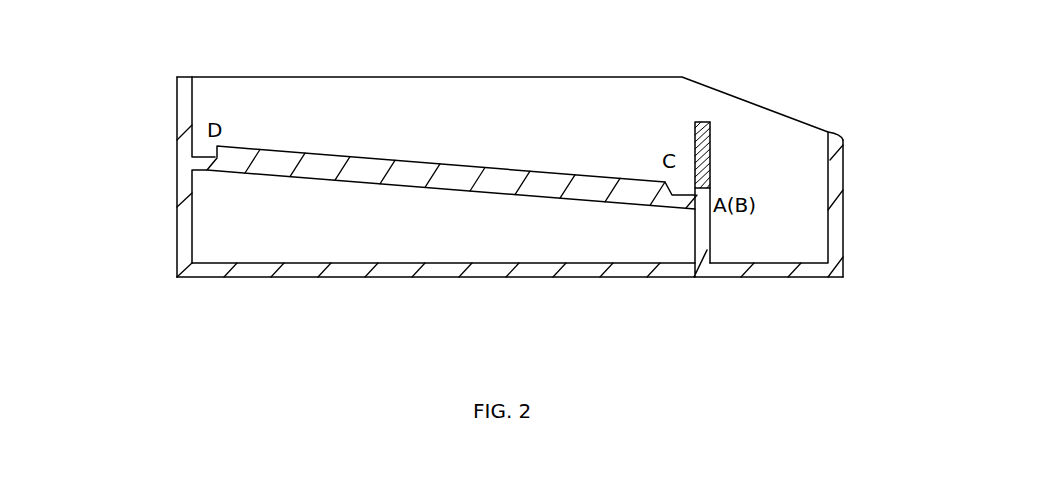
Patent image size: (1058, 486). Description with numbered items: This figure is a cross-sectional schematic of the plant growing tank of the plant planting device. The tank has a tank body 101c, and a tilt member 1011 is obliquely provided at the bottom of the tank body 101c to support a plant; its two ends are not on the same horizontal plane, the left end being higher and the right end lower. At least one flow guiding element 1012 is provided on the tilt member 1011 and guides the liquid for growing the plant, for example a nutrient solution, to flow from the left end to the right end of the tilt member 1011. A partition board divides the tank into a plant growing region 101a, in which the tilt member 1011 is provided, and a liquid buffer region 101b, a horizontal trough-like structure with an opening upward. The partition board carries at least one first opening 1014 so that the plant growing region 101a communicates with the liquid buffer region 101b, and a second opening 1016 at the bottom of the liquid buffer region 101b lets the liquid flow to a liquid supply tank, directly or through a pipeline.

The plant growing region 101a is at (418, 120).
The liquid buffer region 101b is at (775, 198).
The tank body 101c is at (183, 110).
The tilt member 1011 is at (684, 202).
The flow guiding element 1012 is at (596, 178).
The first opening 1014 is at (712, 148).
The second opening 1016 is at (775, 272).